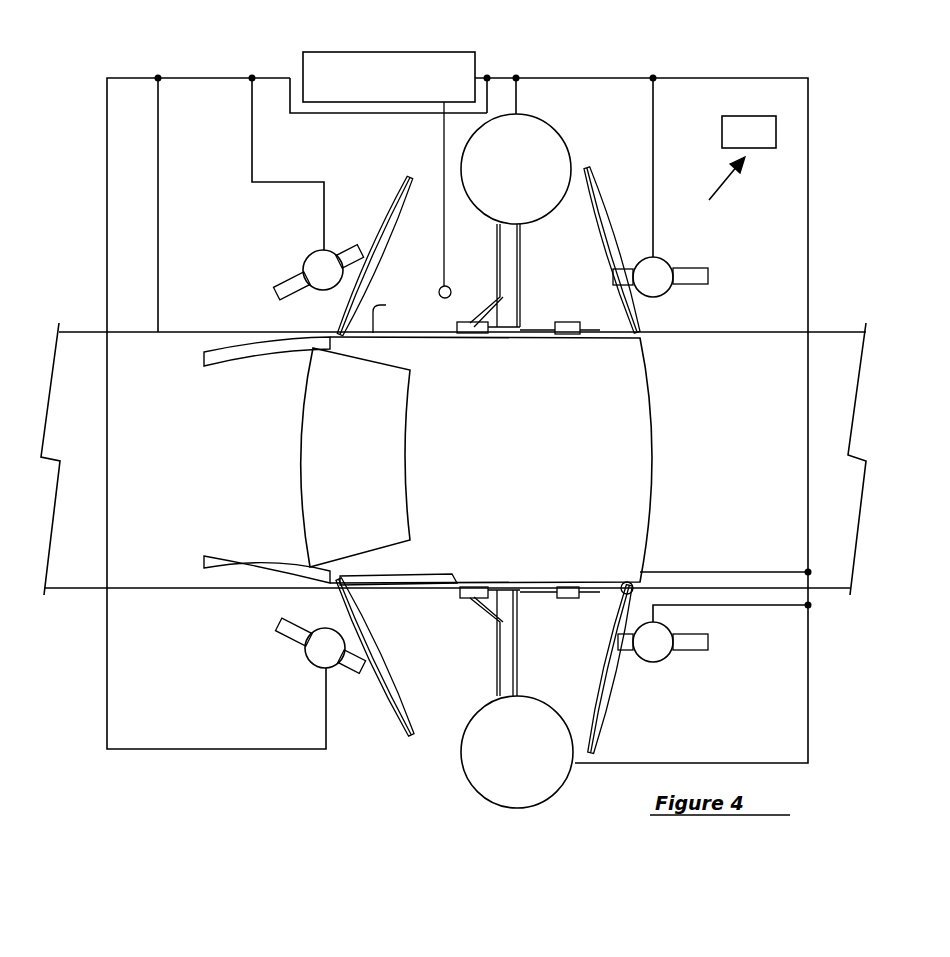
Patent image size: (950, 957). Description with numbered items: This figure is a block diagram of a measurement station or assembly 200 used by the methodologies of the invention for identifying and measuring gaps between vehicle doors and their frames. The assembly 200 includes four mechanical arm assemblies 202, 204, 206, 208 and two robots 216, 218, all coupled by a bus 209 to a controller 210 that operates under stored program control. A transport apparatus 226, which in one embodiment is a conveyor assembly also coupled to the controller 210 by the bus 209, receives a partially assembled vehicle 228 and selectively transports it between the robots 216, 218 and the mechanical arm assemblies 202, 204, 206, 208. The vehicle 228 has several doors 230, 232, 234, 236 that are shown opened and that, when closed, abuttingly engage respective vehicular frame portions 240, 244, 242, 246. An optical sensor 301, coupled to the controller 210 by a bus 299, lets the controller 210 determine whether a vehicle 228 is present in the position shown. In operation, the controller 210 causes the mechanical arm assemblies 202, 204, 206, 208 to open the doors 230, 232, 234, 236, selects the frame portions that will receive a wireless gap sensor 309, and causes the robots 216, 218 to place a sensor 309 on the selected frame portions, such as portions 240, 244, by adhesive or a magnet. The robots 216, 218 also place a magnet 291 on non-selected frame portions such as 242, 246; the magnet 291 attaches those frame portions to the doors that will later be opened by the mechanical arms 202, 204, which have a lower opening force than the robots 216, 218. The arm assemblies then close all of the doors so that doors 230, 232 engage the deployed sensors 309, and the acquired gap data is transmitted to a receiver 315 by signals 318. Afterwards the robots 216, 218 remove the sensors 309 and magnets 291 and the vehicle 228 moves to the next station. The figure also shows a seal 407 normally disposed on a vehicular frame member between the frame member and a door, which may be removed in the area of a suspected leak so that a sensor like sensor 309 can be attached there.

The measurement station or assembly 200 is at (95, 75).
The mechanical arm assembly 202 is at (300, 266).
The mechanical arm assembly 204 is at (284, 656).
The mechanical arm assembly 206 is at (690, 653).
The mechanical arm assembly 208 is at (692, 266).
The bus 209 is at (808, 297).
The controller 210 is at (388, 52).
The robot 216 is at (538, 114).
The robot 218 is at (468, 766).
The transport apparatus 226 is at (833, 547).
The partially assembled vehicle 228 is at (640, 462).
The door 230 is at (380, 205).
The door 232 is at (394, 730).
The door 234 is at (605, 188).
The door 236 is at (616, 706).
The vehicular frame portion 240 is at (384, 325).
The vehicular frame portion 242 is at (578, 323).
The vehicular frame portion 244 is at (402, 592).
The vehicular frame portion 246 is at (590, 602).
The magnet 291 is at (545, 340).
The bus 299 is at (450, 244).
The optical sensor 301 is at (452, 289).
The wireless gap sensor 309 is at (440, 336).
The receiver 315 is at (776, 131).
The signals 318 is at (715, 197).
The seal 407 is at (452, 575).